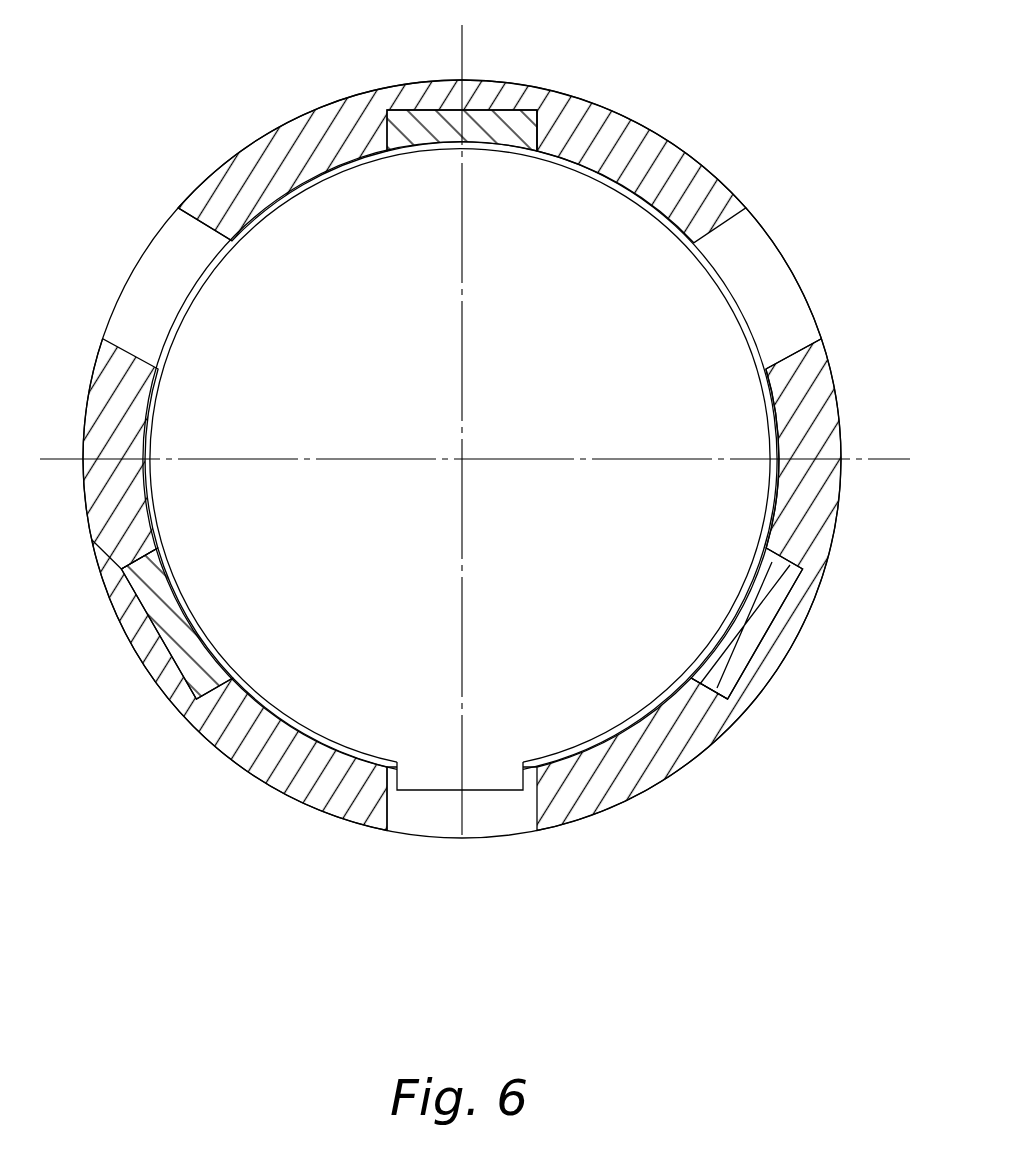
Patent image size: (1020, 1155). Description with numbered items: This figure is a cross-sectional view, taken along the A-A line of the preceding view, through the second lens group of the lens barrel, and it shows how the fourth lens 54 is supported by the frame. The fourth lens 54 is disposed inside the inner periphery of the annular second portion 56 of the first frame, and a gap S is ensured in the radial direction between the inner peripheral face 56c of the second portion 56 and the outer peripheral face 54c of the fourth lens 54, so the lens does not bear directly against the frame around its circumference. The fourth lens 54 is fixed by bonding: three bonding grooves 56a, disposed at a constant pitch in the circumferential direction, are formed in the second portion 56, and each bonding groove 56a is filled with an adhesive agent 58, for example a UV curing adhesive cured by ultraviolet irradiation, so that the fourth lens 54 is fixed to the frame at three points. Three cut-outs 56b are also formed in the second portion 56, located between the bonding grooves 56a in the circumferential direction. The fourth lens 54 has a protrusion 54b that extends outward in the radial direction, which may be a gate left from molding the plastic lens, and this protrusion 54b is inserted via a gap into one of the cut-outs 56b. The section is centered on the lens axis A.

The fourth lens 54 is at (605, 702).
The protrusion 54b is at (492, 778).
The outer peripheral face 54c is at (685, 235).
The second portion 56 is at (690, 728).
The bonding groove 56a is at (527, 105).
The cut-out 56b is at (790, 350).
The inner peripheral face 56c is at (778, 398).
The adhesive agent 58 is at (448, 127).
The gap S is at (633, 195).
The axis A is at (462, 459).